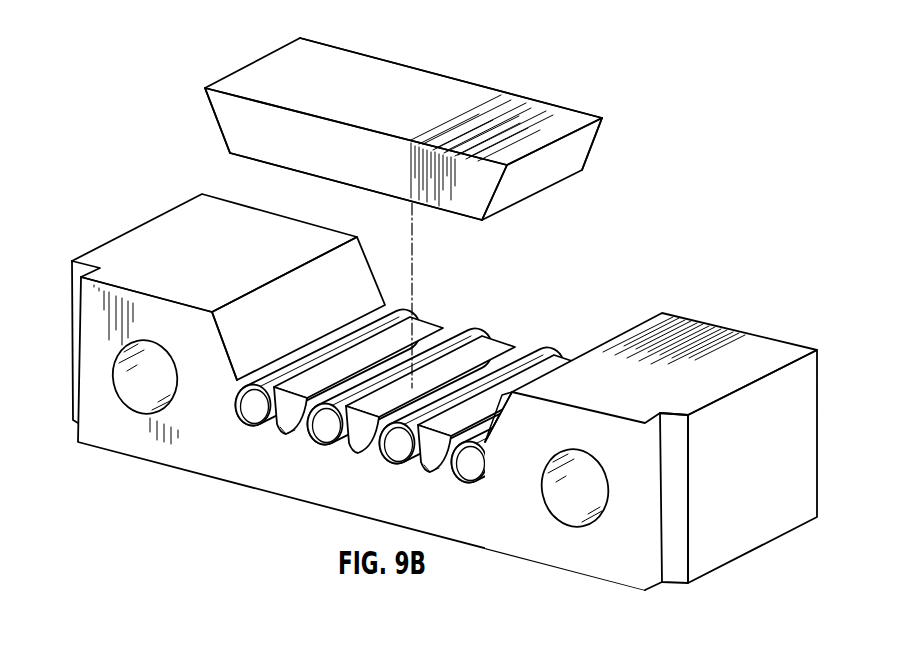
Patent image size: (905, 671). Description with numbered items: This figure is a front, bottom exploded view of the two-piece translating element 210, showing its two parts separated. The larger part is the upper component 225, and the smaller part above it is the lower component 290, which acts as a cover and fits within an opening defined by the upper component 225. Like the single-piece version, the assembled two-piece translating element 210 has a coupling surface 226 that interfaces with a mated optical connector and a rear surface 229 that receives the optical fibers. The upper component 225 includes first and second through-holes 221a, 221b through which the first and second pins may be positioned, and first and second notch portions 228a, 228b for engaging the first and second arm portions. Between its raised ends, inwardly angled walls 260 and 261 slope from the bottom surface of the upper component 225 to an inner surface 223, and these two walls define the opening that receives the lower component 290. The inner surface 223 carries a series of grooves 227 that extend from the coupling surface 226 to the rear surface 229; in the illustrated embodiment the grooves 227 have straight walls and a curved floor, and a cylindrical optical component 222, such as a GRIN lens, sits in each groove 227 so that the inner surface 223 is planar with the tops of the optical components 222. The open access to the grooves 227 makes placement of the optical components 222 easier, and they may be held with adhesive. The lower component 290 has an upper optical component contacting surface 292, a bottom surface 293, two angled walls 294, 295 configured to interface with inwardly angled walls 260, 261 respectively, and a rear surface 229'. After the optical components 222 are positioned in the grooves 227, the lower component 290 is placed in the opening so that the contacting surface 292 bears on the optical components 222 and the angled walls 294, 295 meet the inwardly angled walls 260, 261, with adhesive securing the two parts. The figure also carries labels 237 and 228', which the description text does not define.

The two-piece translating element 210 is at (734, 226).
The first through-hole 221a is at (172, 412).
The second through-hole 221b is at (580, 527).
The optical component 222 is at (403, 311).
The inner surface 223 is at (312, 382).
The upper component 225 is at (777, 353).
The coupling surface 226 is at (512, 531).
The grooves 227 is at (285, 436).
The first notch portion 228a is at (74, 385).
The second notch portion 228b is at (677, 573).
The rear surface 229 is at (676, 326).
The base member 237 is at (620, 312).
The inwardly angled wall 260 is at (510, 394).
The inwardly angled wall 261 is at (327, 306).
The lower component 290 is at (610, 117).
The optical component contacting surface 292 is at (313, 178).
The bottom surface 293 is at (360, 82).
The angled wall 294 is at (563, 167).
The angled wall 295 is at (213, 122).
The front face of cover 228' is at (475, 201).
The rear surface 229' is at (451, 78).